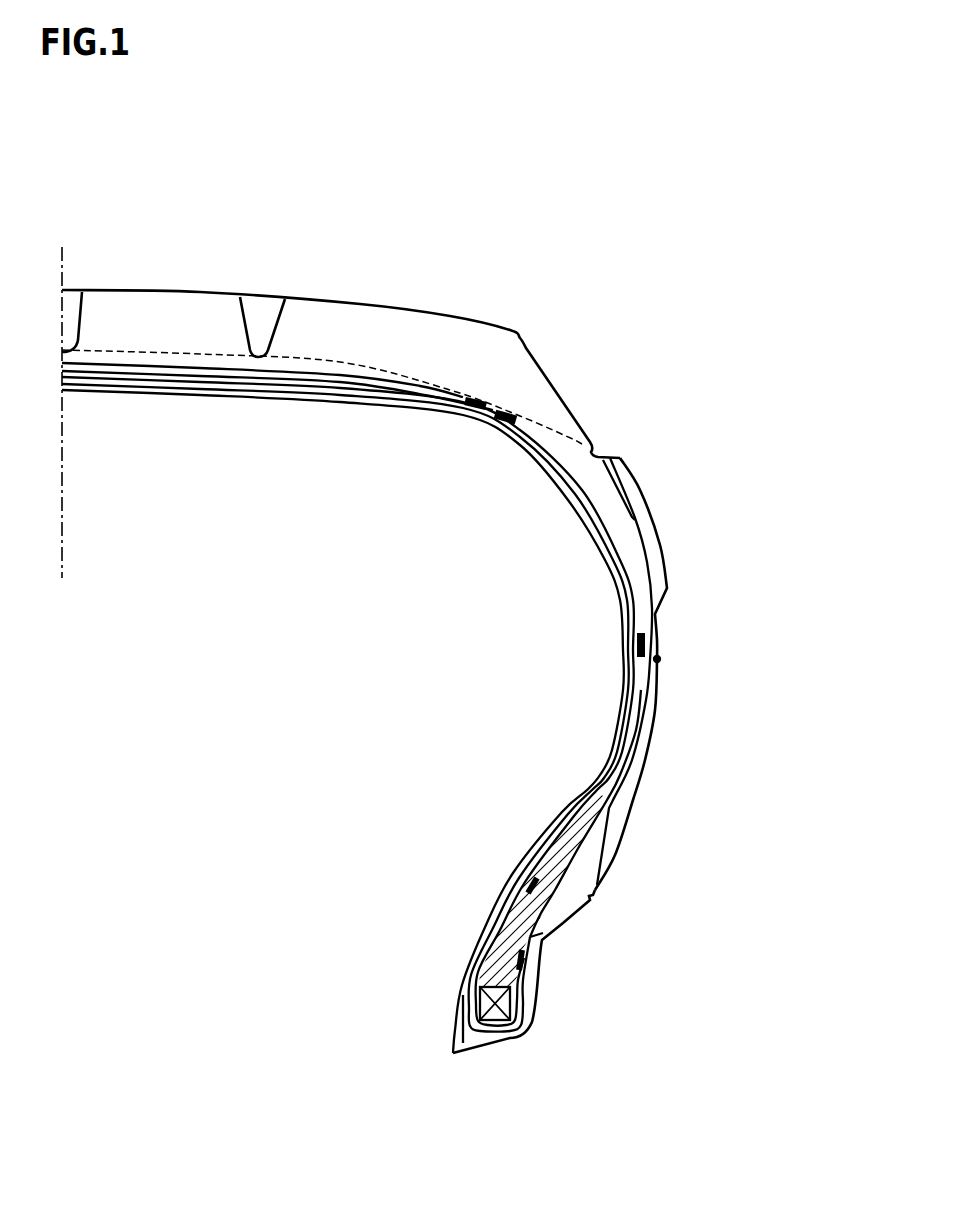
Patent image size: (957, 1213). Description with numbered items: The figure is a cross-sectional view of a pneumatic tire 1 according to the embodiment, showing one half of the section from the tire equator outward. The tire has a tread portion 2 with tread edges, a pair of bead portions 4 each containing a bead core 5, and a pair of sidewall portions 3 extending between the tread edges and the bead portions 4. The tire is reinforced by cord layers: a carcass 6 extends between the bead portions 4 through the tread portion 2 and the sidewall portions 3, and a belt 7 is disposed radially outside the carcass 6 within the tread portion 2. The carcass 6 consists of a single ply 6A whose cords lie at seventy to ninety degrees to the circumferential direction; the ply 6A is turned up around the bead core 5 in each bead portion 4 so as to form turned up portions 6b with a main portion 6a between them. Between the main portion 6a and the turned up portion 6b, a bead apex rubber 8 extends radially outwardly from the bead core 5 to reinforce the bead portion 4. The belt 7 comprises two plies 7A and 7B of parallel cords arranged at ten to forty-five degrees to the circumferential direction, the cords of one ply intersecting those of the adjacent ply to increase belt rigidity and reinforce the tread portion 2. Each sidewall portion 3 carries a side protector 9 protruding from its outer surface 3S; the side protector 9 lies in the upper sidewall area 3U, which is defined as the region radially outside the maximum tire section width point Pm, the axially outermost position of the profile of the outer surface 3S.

The pneumatic tire 1 is at (535, 253).
The tread portion 2 is at (393, 292).
The sidewall portion 3 is at (665, 740).
The outer surface 3S is at (647, 562).
The upper sidewall area 3U is at (744, 457).
The bead portion 4 is at (460, 918).
The bead core 5 is at (492, 1017).
The carcass 6 is at (490, 628).
The carcass ply 6A is at (478, 606).
The main portion 6a is at (637, 650).
The turned up portion 6b is at (640, 704).
The belt 7 is at (315, 212).
The belt ply 7A is at (222, 378).
The belt ply 7B is at (298, 378).
The bead apex rubber 8 is at (540, 857).
The side protector 9 is at (655, 497).
The maximum tire section width point Pm is at (660, 661).